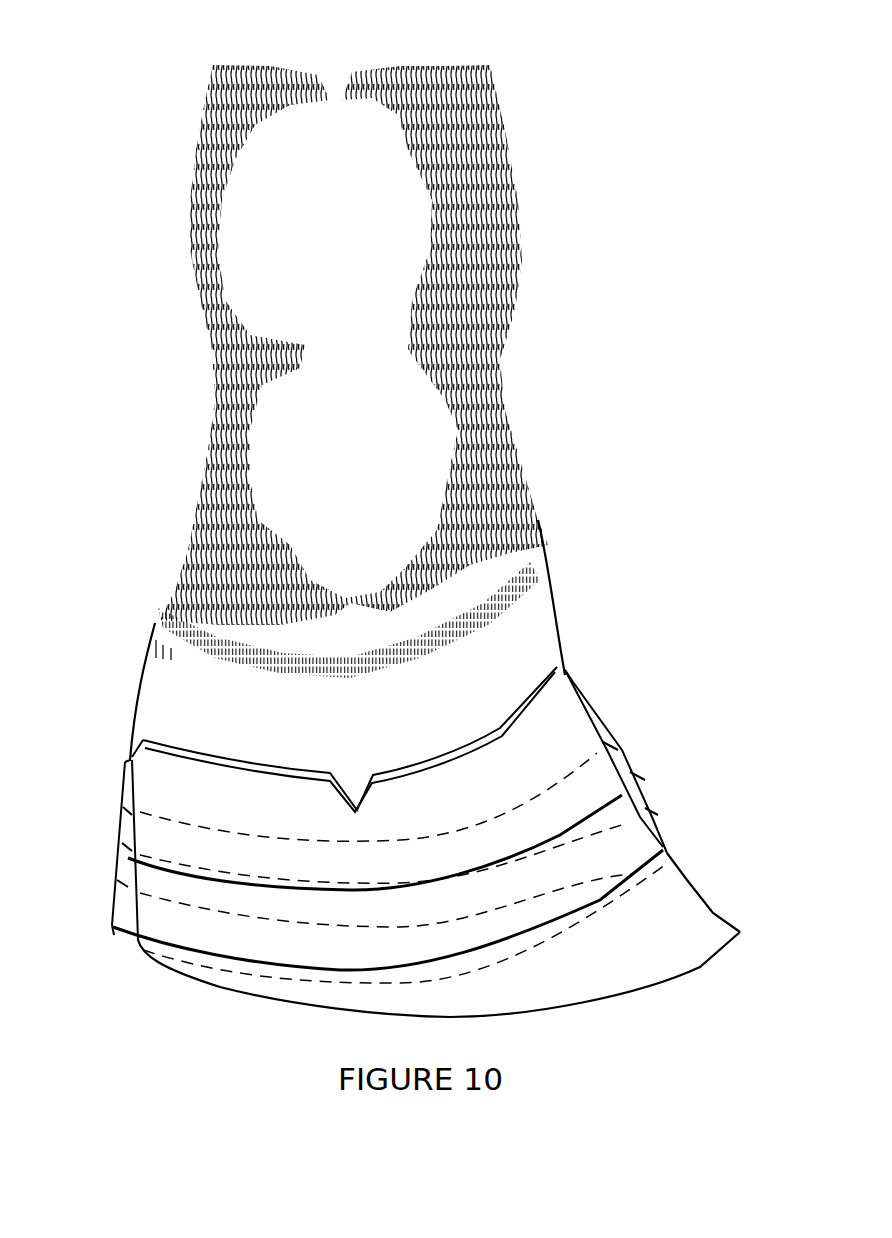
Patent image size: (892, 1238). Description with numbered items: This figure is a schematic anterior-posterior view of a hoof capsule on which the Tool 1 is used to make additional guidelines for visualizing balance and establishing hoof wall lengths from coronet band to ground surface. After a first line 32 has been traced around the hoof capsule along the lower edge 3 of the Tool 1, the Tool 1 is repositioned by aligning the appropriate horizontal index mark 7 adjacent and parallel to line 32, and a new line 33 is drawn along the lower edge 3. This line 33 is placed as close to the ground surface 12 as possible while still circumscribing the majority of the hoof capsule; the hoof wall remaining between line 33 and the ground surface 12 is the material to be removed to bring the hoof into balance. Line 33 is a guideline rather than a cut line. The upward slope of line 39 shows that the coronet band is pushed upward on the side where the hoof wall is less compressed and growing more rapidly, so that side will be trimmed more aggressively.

The Tool 1 is at (533, 753).
The lower edge 3 is at (117, 928).
The horizontal index mark 7 is at (657, 790).
The ground surface 12 is at (555, 1020).
The line 32 is at (183, 873).
The line 33 is at (218, 967).
The line 39 is at (603, 549).